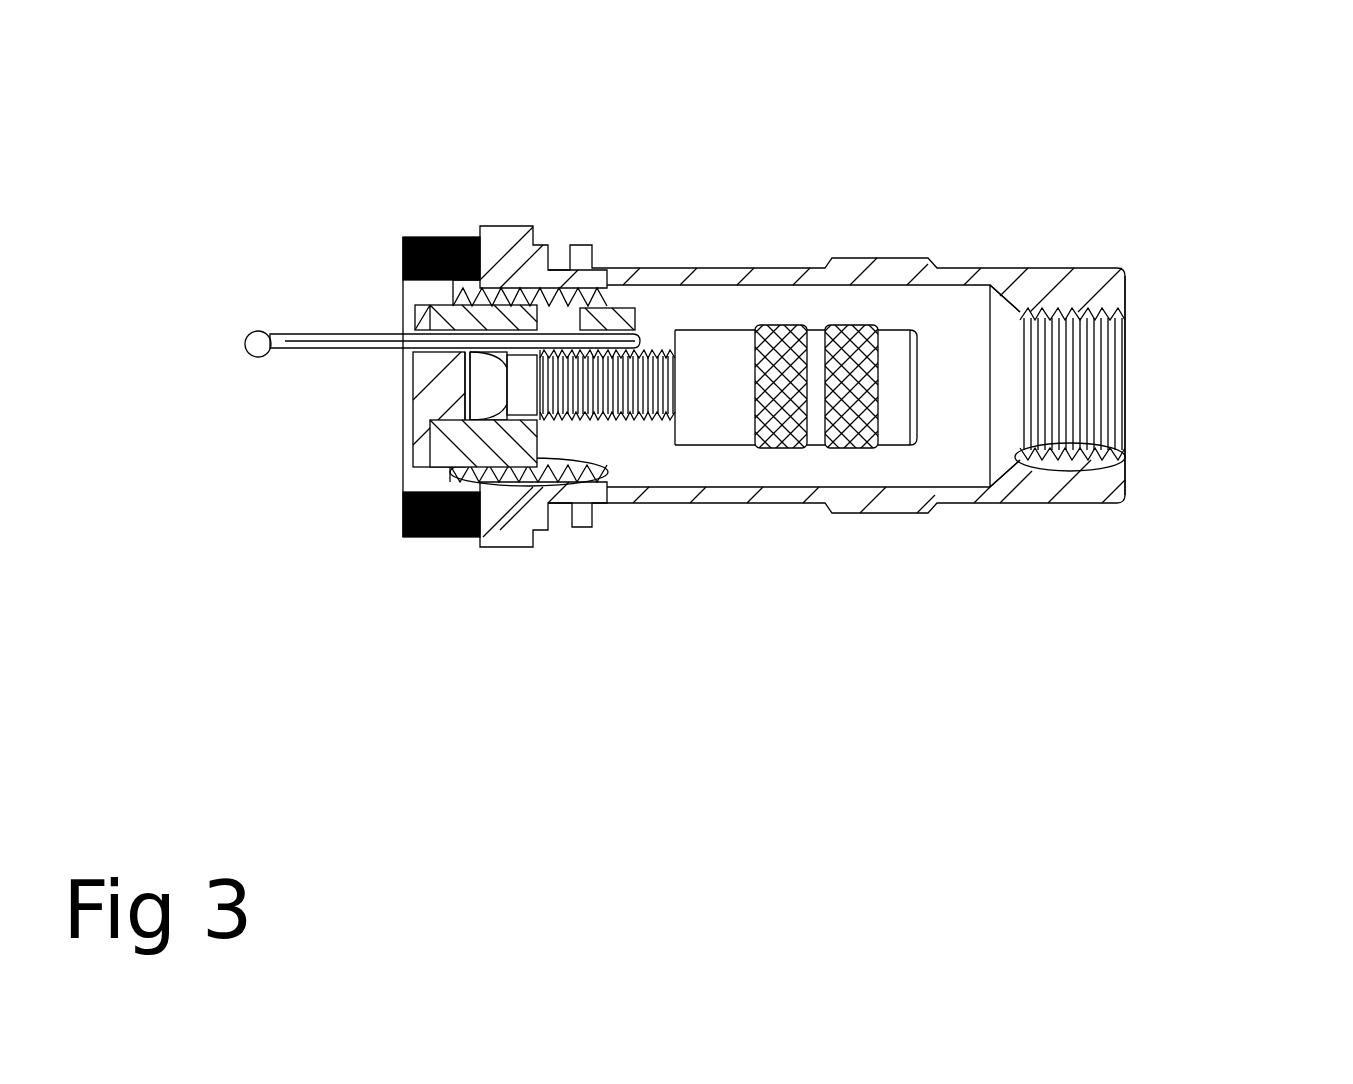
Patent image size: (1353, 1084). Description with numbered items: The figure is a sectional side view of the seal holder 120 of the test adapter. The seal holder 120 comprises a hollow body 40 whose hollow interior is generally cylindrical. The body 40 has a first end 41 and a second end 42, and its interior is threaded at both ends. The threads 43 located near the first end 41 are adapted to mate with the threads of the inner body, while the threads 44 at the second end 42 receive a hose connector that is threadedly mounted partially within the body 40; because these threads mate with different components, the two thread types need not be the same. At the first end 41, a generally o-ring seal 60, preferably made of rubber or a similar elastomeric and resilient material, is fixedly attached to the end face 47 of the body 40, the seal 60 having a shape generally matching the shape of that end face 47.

The seal holder 120 is at (797, 401).
The o-ring seal 60 is at (442, 237).
The hollow body 40 is at (878, 513).
The first end 41 is at (483, 577).
The second end 42 is at (1146, 527).
The threads 43 is at (610, 470).
The threads 44 is at (1128, 463).
The end face 47 is at (490, 478).